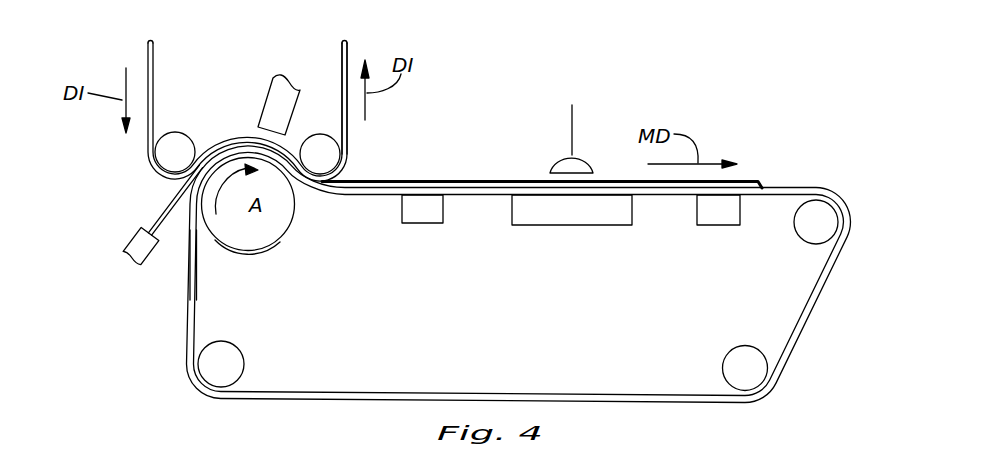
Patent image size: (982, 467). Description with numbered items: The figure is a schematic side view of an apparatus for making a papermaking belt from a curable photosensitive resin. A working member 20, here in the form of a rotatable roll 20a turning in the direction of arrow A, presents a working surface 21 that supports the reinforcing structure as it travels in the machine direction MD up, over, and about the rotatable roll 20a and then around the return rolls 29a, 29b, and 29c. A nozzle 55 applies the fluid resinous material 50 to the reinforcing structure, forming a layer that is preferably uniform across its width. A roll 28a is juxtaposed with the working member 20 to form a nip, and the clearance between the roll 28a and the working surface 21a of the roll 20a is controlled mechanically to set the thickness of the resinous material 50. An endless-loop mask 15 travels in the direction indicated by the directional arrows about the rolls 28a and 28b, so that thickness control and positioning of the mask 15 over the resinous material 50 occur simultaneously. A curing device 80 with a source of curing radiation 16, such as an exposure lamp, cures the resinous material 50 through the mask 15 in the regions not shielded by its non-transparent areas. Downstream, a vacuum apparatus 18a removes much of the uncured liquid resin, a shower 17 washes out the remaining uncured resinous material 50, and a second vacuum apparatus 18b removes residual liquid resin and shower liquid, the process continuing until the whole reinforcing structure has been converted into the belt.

The mask 15 is at (155, 62).
The source of curing radiation 16 is at (285, 102).
The curing device 80 is at (275, 78).
The roll 28a is at (172, 148).
The roll 28b is at (330, 162).
The working member 20 is at (270, 222).
The rotatable roll 20a is at (248, 238).
The working surface 21 is at (310, 204).
The working surface of the roll 21a is at (221, 259).
The fluid resinous material 50 is at (163, 210).
The nozzle 55 is at (127, 245).
The shower 17 is at (600, 139).
The vacuum apparatus 18a is at (429, 215).
The vacuum apparatus 18b is at (718, 213).
The return roll 29a is at (220, 373).
The return roll 29b is at (816, 226).
The return roll 29c is at (737, 370).